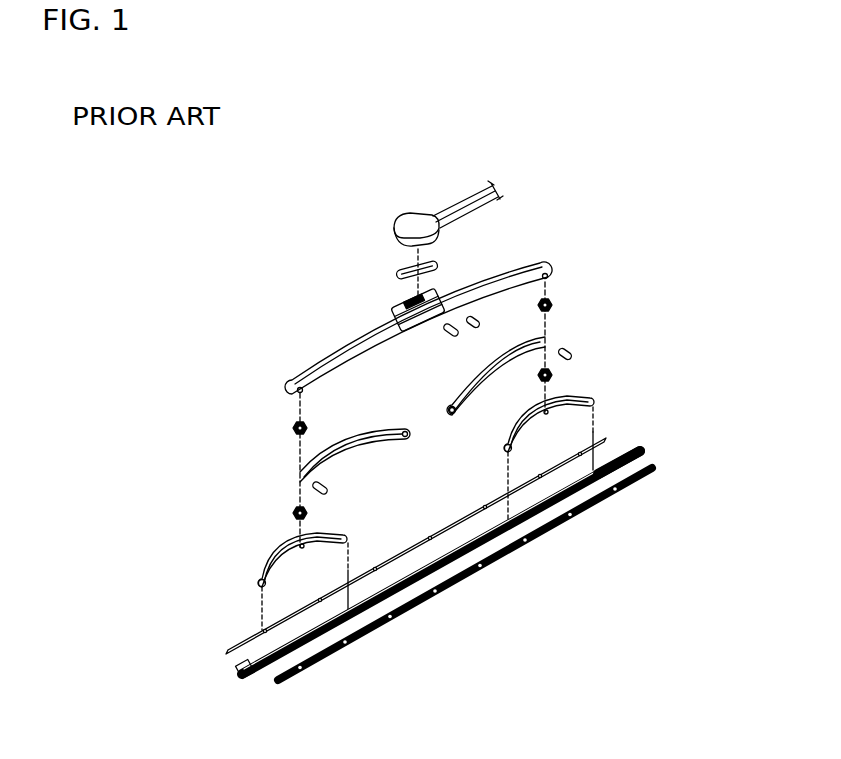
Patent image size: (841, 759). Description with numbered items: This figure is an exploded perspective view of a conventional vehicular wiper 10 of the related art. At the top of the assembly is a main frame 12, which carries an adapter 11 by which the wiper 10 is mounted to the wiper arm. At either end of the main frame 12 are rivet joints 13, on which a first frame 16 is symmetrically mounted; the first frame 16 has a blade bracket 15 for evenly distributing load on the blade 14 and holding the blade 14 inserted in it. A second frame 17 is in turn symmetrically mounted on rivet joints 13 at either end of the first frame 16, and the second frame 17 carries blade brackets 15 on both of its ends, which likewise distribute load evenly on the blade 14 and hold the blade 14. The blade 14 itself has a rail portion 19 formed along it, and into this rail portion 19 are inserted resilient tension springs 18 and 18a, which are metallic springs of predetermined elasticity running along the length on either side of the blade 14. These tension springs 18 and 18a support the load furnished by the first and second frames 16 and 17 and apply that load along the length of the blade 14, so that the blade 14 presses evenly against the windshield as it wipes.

The wiper 10 is at (408, 222).
The adapter 11 is at (402, 268).
The main frame 12 is at (532, 256).
The rivet joints 13 is at (553, 302).
The blade 14 is at (648, 448).
The blade bracket 15 is at (450, 406).
The first frame 16 is at (560, 337).
The second frame 17 is at (602, 395).
The resilient tension spring 18 is at (277, 678).
The resilient tension spring 18a is at (226, 652).
The rail portion 19 is at (245, 668).